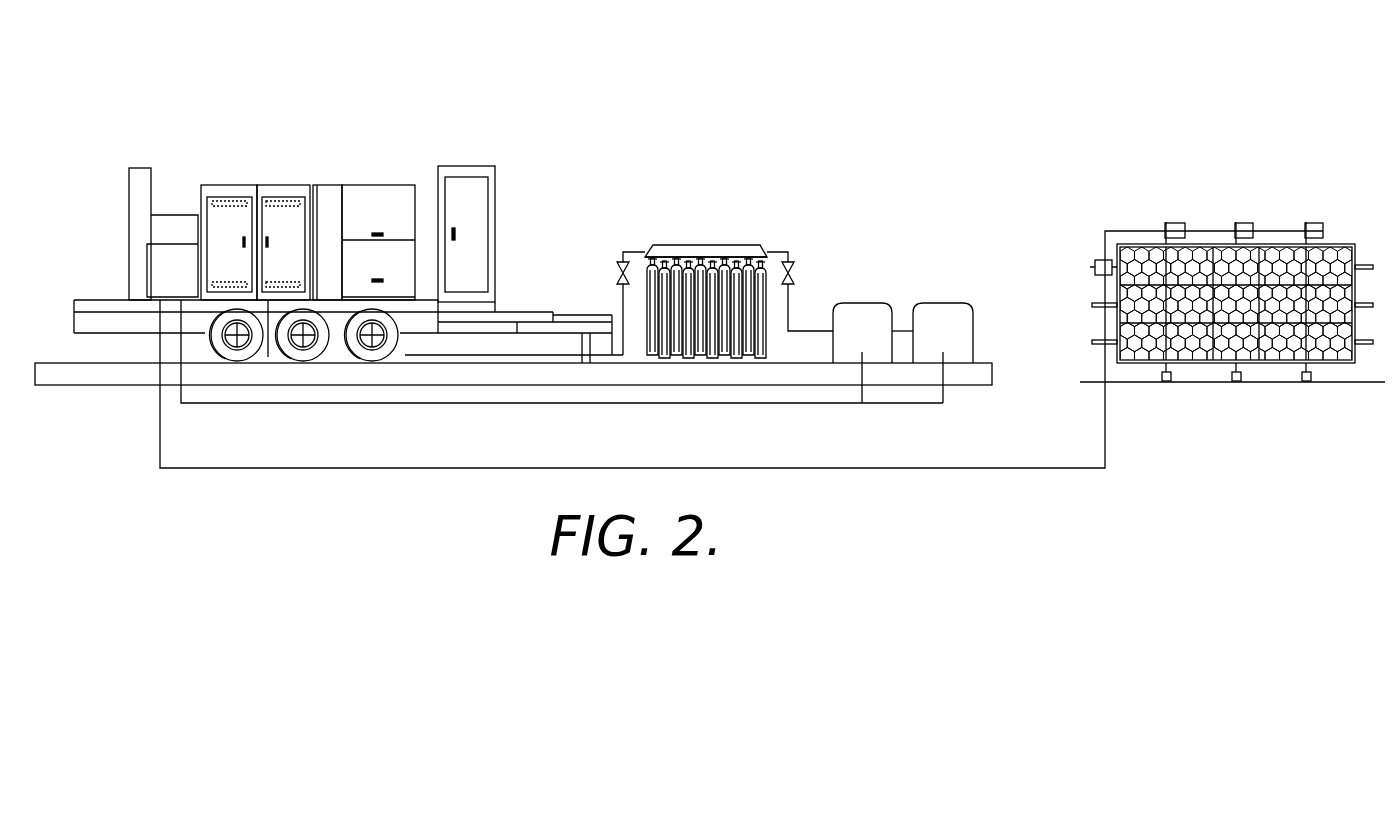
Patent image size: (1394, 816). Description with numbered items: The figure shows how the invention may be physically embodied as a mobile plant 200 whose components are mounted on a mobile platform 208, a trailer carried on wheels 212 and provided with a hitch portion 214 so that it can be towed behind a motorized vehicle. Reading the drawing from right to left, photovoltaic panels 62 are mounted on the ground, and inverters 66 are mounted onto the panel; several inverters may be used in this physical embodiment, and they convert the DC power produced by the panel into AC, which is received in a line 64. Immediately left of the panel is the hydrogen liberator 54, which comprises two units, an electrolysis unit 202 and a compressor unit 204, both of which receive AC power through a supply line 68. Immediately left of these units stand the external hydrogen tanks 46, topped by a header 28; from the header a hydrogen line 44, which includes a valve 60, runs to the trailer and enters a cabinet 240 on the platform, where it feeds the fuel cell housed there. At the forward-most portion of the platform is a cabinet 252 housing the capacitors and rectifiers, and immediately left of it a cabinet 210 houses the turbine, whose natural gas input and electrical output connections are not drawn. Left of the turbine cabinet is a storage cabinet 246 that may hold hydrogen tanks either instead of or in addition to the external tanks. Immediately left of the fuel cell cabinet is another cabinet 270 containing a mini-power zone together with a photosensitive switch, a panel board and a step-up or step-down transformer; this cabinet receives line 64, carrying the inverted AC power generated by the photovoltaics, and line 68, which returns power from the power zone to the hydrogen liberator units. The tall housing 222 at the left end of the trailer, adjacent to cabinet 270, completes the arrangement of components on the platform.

The mobile plant 200 is at (324, 76).
The exhaust stack 222 is at (138, 170).
The cabinet 270 is at (170, 215).
The cabinet 240 is at (272, 185).
The storage cabinet 246 is at (329, 185).
The cabinet 210 is at (364, 185).
The cabinet 252 is at (465, 168).
The mobile platform 208 is at (92, 310).
The wheels 212 is at (283, 362).
The hydrogen line 44 is at (490, 363).
The hitch portion 214 is at (605, 333).
The hydrogen tanks 46 is at (722, 355).
The header 28 is at (706, 250).
The valve 60 is at (617, 273).
The compressor unit 204 is at (864, 303).
The electrolysis unit 202 is at (948, 303).
The hydrogen liberator 54 is at (926, 362).
The supply line 68 is at (784, 404).
The line 64 is at (1140, 229).
The inverters 66 is at (1315, 225).
The photovoltaic panels 62 is at (1358, 247).